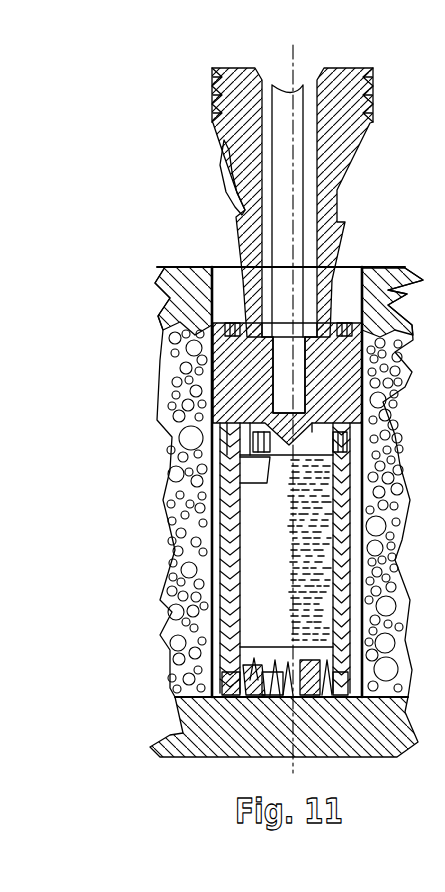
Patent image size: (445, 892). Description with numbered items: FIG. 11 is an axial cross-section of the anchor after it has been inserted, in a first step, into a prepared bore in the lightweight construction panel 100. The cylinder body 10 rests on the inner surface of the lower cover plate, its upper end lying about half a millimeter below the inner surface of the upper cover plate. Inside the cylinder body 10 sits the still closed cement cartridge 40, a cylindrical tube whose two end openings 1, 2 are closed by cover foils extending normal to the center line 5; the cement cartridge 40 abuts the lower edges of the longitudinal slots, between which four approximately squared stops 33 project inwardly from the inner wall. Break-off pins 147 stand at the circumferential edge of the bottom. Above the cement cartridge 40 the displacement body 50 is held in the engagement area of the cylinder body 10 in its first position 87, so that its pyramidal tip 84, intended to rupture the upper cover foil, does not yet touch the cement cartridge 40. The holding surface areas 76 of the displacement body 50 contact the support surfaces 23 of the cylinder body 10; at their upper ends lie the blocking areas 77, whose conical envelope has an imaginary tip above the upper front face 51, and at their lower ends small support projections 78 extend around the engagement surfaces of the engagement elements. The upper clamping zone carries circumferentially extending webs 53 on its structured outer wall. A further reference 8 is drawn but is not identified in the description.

The upper front face 51 is at (243, 68).
The circumferentially extending webs 53 is at (222, 95).
The first position 87 is at (188, 125).
The displacement body 50 is at (215, 170).
The lightweight construction panel 100 is at (177, 262).
The blocking areas 77 is at (245, 333).
The support surface 23 is at (240, 366).
The holding surface areas 76 is at (296, 368).
The support projections 78 is at (255, 432).
The cylinder body 10 is at (183, 409).
The stops 33 is at (240, 452).
The pyramidal tip 84 is at (268, 480).
The opening 1 is at (287, 492).
The cement cartridge 40 is at (212, 560).
The liquid 8 is at (287, 578).
The opening 2 is at (270, 640).
The break-off pins 147 is at (225, 657).
The center line 5 is at (287, 717).